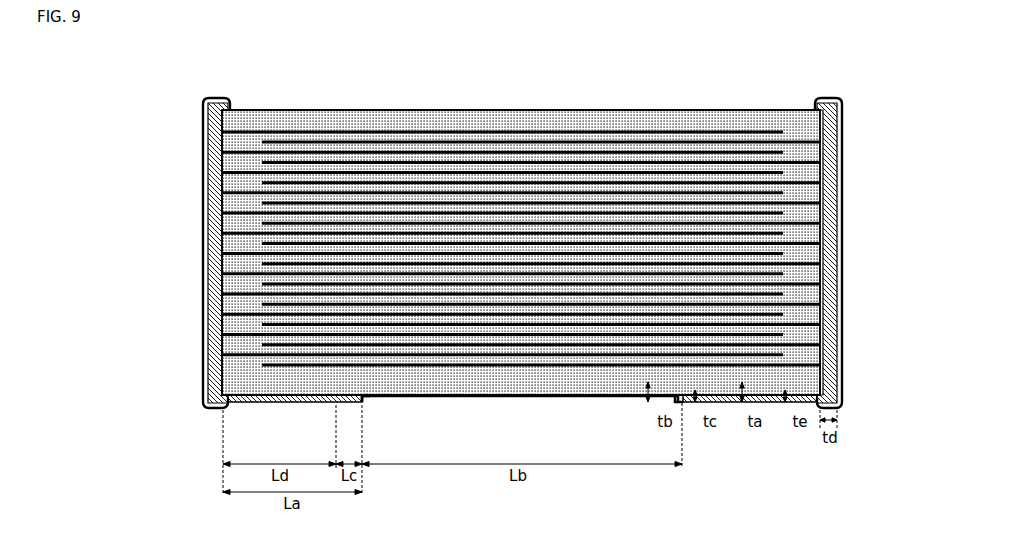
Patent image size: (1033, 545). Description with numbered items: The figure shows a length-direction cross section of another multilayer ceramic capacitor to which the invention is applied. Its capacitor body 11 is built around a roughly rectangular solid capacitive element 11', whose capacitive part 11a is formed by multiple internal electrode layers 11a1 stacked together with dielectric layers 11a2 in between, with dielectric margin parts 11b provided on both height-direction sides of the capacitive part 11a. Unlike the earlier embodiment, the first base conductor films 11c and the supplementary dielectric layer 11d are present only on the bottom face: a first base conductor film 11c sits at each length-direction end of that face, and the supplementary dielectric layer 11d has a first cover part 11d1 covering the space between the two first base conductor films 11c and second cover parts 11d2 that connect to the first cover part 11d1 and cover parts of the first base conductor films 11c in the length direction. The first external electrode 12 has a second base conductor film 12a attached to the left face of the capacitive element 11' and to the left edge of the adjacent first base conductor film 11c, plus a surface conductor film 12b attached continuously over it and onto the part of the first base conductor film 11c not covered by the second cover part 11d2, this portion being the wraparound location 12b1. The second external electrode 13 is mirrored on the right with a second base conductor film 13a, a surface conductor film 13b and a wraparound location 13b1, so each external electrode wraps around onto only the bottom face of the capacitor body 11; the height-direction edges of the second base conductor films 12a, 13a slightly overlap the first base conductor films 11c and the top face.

The capacitor body 11 is at (521, 283).
The capacitive element 11' is at (520, 426).
The capacitive part 11a is at (481, 368).
The internal electrode layer 11a1 is at (436, 128).
The dielectric layer 11a2 is at (485, 125).
The dielectric margin part 11b is at (536, 122).
The first base conductor film 11c is at (240, 388).
The supplementary dielectric layer 11d is at (594, 396).
The first cover part 11d1 is at (520, 426).
The second cover part 11d2 is at (345, 402).
The first external electrode 12 is at (247, 277).
The second base conductor film 12a is at (206, 313).
The surface conductor film 12b is at (206, 195).
The wraparound location 12b1 is at (256, 405).
The second external electrode 13 is at (797, 280).
The second base conductor film 13a is at (845, 312).
The surface conductor film 13b is at (845, 192).
The wraparound location 13b1 is at (780, 406).